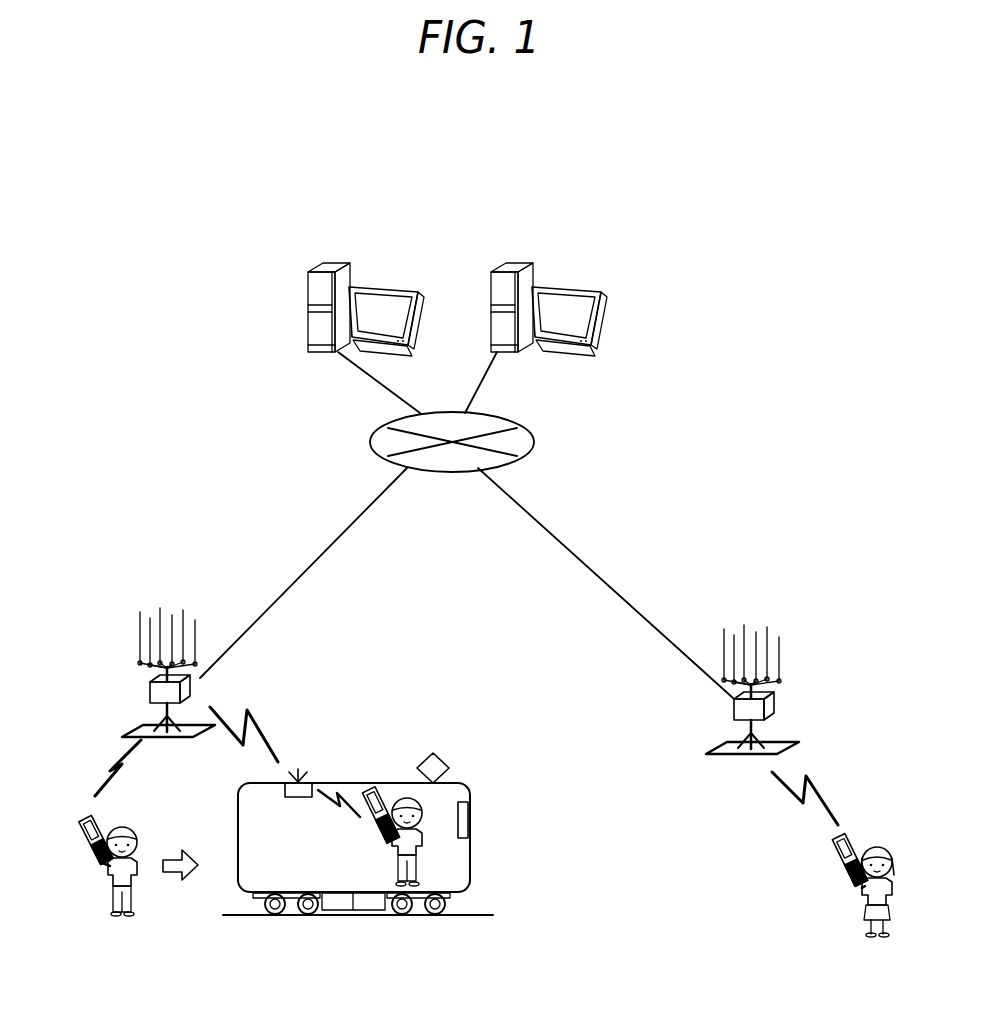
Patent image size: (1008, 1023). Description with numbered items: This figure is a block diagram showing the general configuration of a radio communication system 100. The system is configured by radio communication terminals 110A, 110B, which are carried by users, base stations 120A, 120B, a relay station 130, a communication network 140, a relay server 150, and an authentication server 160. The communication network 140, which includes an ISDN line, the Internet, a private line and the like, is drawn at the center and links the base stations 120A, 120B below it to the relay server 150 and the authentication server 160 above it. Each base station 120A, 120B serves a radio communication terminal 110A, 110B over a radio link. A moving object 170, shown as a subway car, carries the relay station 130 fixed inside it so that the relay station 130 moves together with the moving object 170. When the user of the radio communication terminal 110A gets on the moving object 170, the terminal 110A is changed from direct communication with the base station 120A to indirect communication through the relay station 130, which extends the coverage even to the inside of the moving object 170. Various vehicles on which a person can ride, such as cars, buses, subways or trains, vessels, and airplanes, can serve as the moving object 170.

The radio communication system 100 is at (652, 404).
The radio communication terminal 110A is at (89, 868).
The radio communication terminal 110B is at (838, 867).
The base station 120A is at (190, 690).
The base station 120B is at (775, 707).
The relay station 130 is at (317, 780).
The communication network 140 is at (397, 418).
The relay server 150 is at (360, 263).
The authentication server 160 is at (543, 263).
The moving object 170 is at (470, 862).